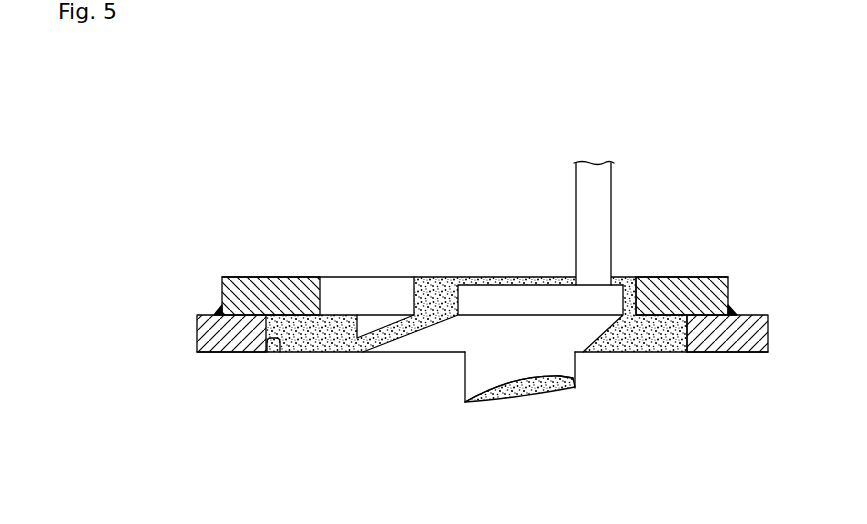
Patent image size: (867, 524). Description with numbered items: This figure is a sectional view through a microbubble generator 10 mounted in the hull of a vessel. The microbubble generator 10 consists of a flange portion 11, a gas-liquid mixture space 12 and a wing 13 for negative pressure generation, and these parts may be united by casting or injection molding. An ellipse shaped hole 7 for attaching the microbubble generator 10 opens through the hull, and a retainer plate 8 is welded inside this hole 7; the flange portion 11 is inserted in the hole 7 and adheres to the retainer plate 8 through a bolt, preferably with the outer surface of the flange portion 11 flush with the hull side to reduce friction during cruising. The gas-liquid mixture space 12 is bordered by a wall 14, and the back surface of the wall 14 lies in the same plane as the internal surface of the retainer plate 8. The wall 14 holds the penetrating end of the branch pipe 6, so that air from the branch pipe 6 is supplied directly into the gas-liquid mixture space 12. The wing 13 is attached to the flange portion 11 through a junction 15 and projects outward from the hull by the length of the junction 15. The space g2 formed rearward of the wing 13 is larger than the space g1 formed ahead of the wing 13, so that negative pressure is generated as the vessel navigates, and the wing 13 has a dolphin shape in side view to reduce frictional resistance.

The branch pipe 6 is at (603, 203).
The ellipse shaped hole 7 is at (273, 346).
The retainer plate 8 is at (282, 285).
The microbubble generator 10 is at (411, 429).
The flange portion 11 is at (657, 340).
The gas-liquid mixture space 12 is at (536, 345).
The wing 13 is at (537, 398).
The wall 14 is at (506, 278).
The junction 15 is at (492, 373).
The space formed ahead of the wing g1 is at (590, 370).
The space formed rearward of the wing g2 is at (450, 377).